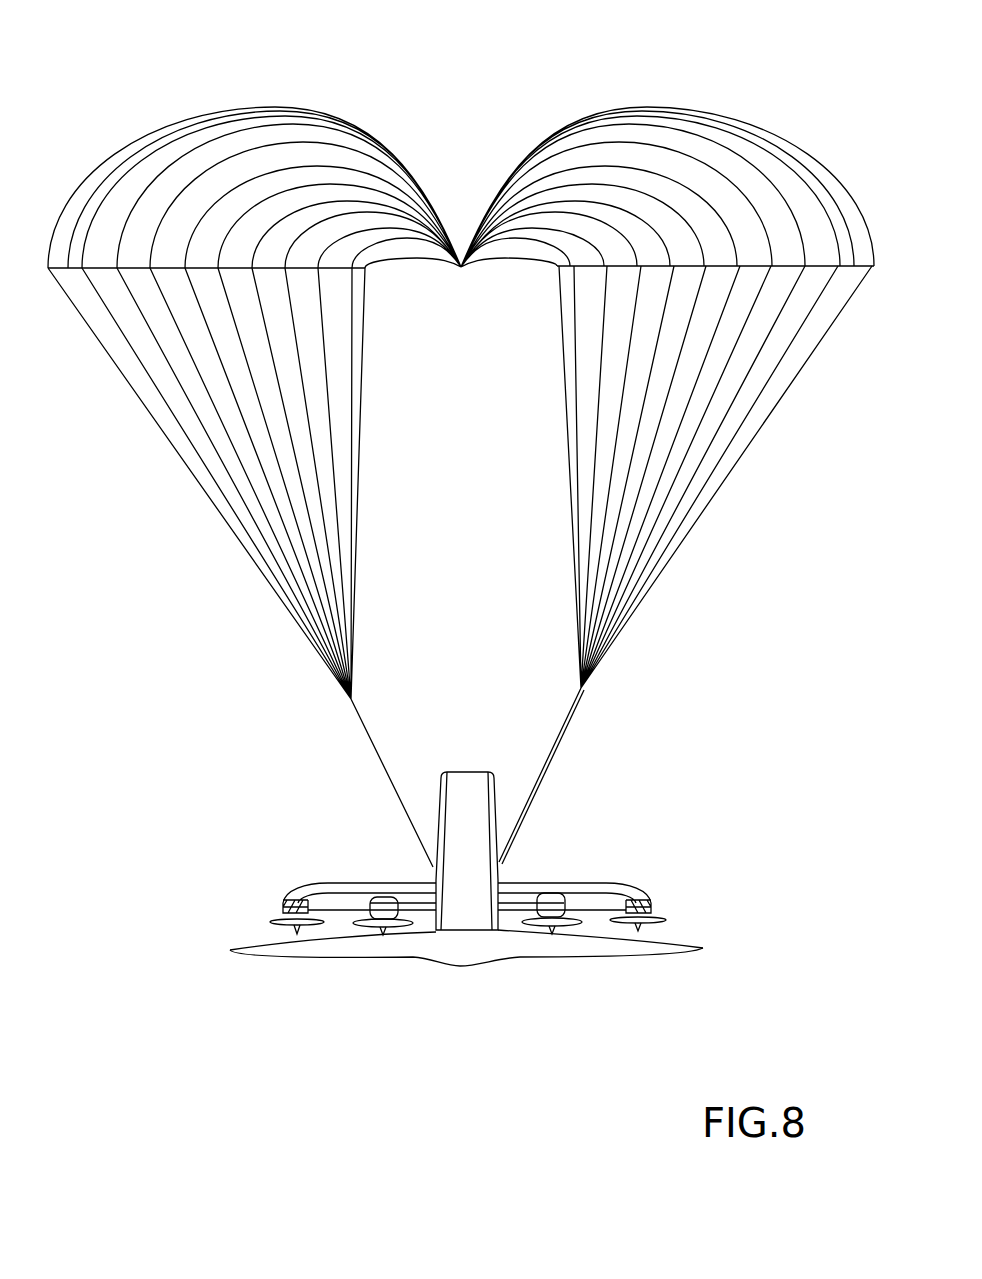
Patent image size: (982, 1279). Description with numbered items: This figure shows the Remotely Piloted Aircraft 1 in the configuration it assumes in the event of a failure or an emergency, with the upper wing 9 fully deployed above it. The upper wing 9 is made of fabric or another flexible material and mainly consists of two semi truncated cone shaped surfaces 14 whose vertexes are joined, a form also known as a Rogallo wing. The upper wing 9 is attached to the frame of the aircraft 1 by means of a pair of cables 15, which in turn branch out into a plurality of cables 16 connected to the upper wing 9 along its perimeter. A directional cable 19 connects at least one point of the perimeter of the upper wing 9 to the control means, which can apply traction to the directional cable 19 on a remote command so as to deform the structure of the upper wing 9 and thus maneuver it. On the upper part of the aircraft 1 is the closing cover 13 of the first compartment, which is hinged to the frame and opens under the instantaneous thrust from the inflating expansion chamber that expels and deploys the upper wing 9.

The upper wing 9 is at (229, 95).
The semi truncated cone shaped surfaces 14 is at (305, 118).
The cables 16 is at (764, 349).
The pair of cables 15 is at (493, 777).
The directional cable 19 is at (567, 715).
The Remotely Piloted Aircraft 1 is at (352, 858).
The closing cover 13 is at (478, 868).